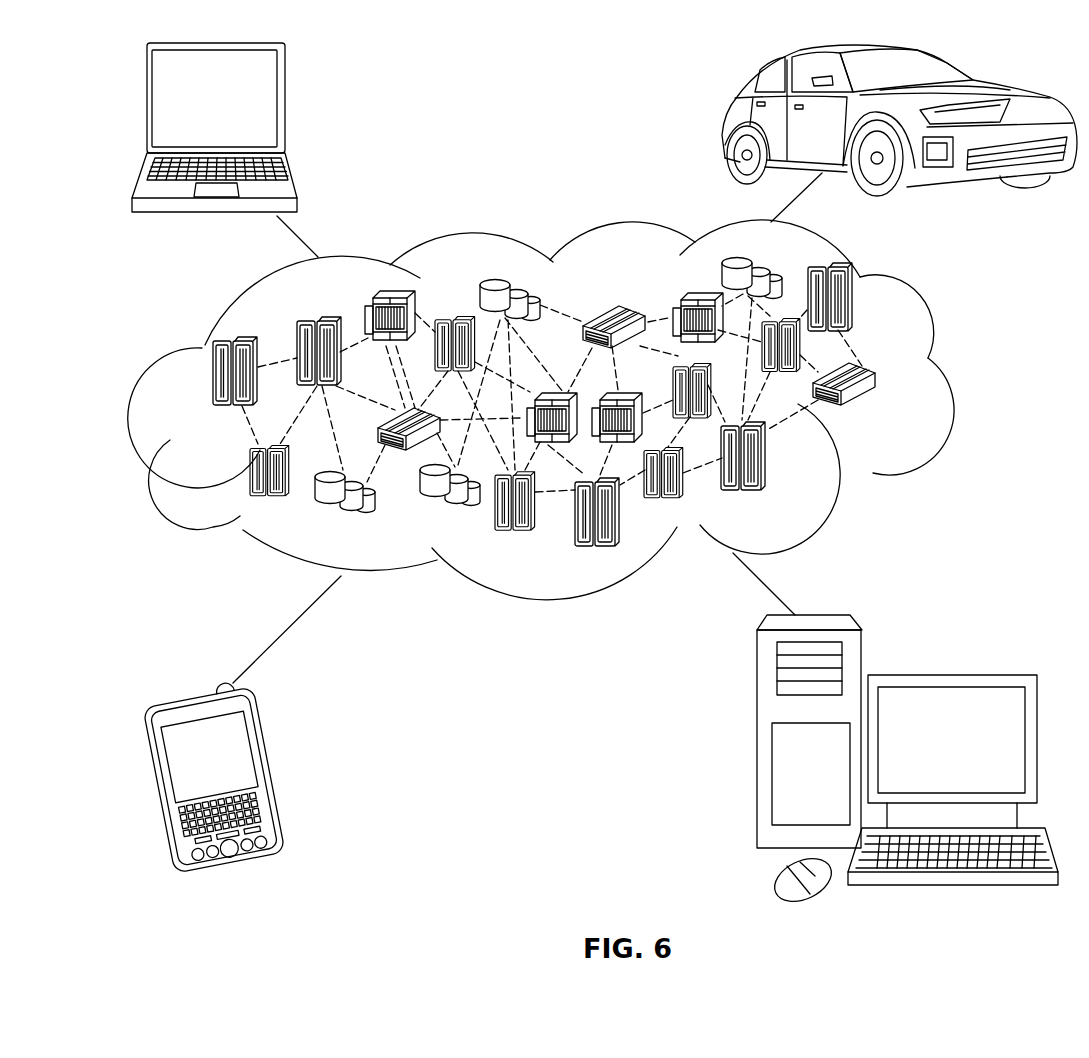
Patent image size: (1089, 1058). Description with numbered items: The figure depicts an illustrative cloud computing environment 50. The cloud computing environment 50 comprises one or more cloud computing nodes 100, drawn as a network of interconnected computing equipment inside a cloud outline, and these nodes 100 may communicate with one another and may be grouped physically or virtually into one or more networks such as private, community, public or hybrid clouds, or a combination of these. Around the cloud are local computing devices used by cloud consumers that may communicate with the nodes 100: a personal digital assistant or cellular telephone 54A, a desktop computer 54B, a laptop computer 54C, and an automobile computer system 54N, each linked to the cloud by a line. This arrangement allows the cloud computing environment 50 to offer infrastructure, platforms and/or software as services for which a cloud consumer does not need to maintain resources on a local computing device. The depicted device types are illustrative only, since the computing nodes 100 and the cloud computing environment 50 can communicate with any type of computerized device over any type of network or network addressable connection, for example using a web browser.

The cloud computing environment 50 is at (938, 380).
The cloud computing nodes 100 is at (890, 411).
The personal digital assistant or cellular telephone 54A is at (277, 770).
The desktop computer 54B is at (948, 675).
The laptop computer 54C is at (284, 108).
The automobile computer system 54N is at (728, 125).